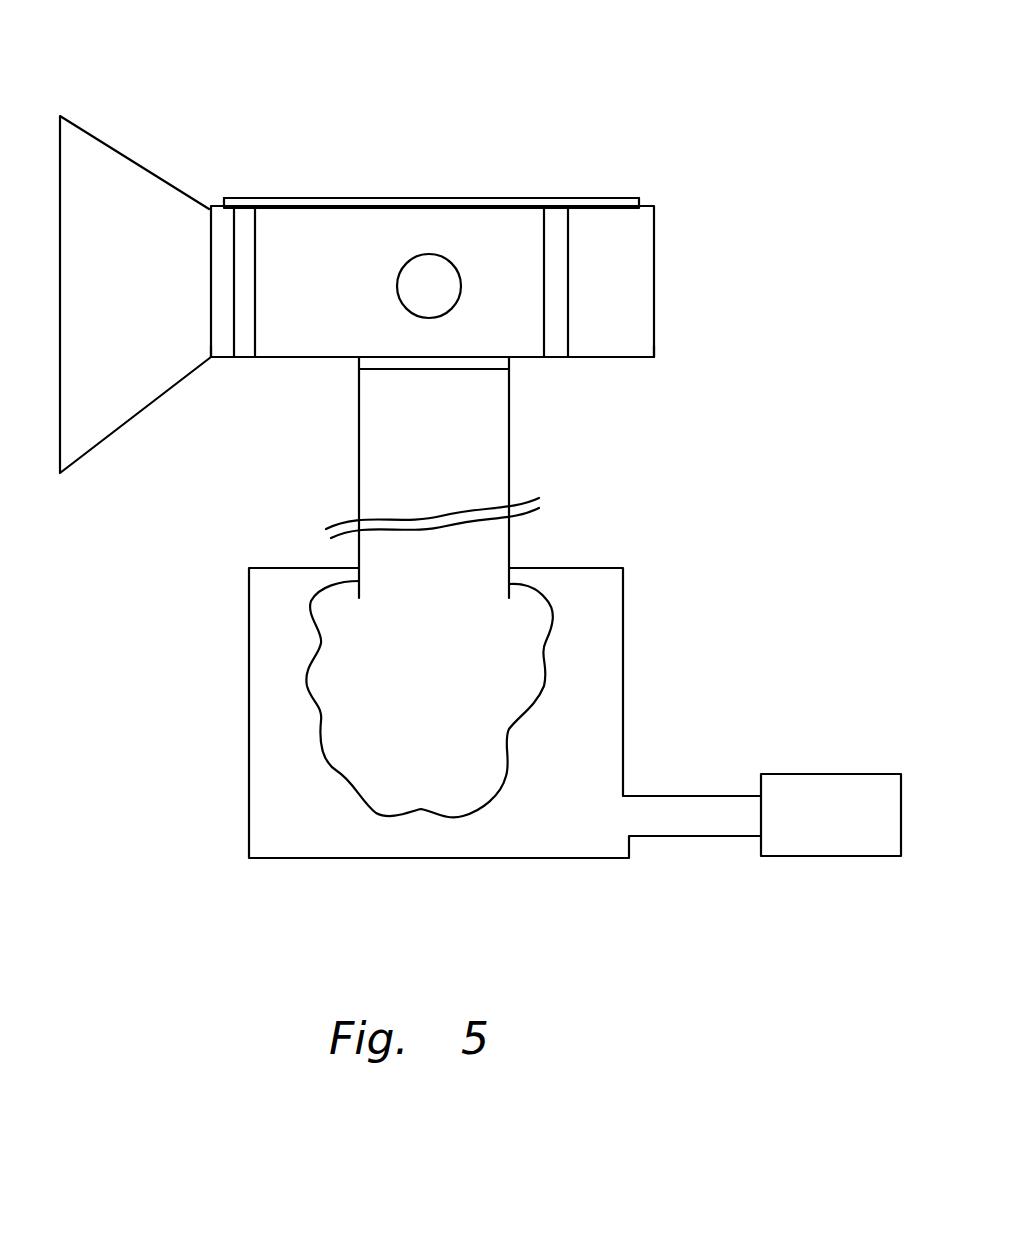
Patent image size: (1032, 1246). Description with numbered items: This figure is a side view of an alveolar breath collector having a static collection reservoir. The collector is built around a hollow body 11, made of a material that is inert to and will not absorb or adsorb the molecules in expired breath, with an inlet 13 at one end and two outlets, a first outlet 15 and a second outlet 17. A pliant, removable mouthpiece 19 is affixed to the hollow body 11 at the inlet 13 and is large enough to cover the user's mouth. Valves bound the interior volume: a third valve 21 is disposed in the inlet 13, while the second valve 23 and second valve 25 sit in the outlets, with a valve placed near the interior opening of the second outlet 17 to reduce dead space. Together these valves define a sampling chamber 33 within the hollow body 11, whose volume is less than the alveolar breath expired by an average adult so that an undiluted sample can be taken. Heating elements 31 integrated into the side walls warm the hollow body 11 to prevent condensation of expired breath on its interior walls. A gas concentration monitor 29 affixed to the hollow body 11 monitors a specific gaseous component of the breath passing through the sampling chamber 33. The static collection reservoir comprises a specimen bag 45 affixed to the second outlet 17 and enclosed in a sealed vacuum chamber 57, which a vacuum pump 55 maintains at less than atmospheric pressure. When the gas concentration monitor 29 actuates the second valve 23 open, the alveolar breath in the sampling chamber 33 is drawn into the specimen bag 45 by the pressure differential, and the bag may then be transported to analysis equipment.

The hollow body 11 is at (382, 207).
The inlet 13 is at (224, 352).
The first outlet 15 is at (614, 348).
The second outlet 17 is at (365, 383).
The mouthpiece 19 is at (152, 170).
The third valve 21 is at (555, 223).
The second valve 23 is at (500, 362).
The second valve 25 is at (243, 220).
The gas concentration monitor 29 is at (436, 253).
The heating elements 31 is at (345, 197).
The sampling chamber 33 is at (432, 281).
The specimen bag 45 is at (553, 620).
The vacuum pump 55 is at (827, 770).
The vacuum chamber 57 is at (625, 703).